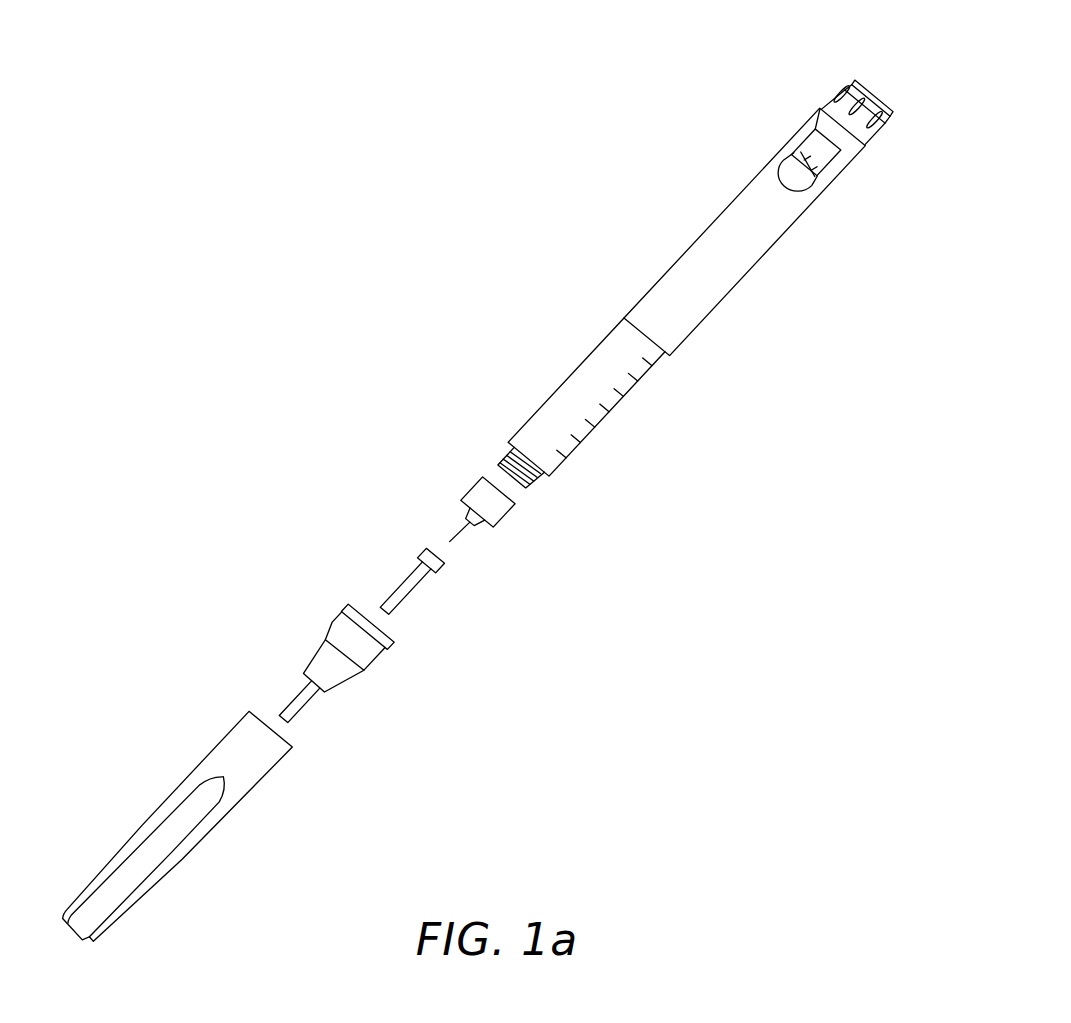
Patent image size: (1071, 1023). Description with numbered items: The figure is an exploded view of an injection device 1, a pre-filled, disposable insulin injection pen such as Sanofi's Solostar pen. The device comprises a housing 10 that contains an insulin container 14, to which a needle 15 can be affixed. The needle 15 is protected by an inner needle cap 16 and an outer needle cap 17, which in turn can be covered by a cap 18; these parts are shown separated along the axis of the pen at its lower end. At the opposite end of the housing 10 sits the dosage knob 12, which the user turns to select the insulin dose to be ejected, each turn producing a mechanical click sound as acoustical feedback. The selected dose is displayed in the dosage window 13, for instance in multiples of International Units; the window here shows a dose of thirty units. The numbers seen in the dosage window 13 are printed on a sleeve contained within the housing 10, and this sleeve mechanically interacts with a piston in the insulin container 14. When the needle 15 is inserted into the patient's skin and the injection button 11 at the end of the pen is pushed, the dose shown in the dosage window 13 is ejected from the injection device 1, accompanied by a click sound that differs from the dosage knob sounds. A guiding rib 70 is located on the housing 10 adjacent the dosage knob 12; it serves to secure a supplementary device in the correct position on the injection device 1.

The injection device 1 is at (551, 276).
The housing 10 is at (708, 238).
The injection button 11 is at (883, 82).
The dosage knob 12 is at (814, 96).
The dosage window 13 is at (785, 149).
The insulin container 14 is at (573, 385).
The needle 15 is at (477, 493).
The inner needle cap 16 is at (407, 587).
The outer needle cap 17 is at (340, 632).
The cap 18 is at (225, 743).
The guiding rib 70 is at (836, 134).